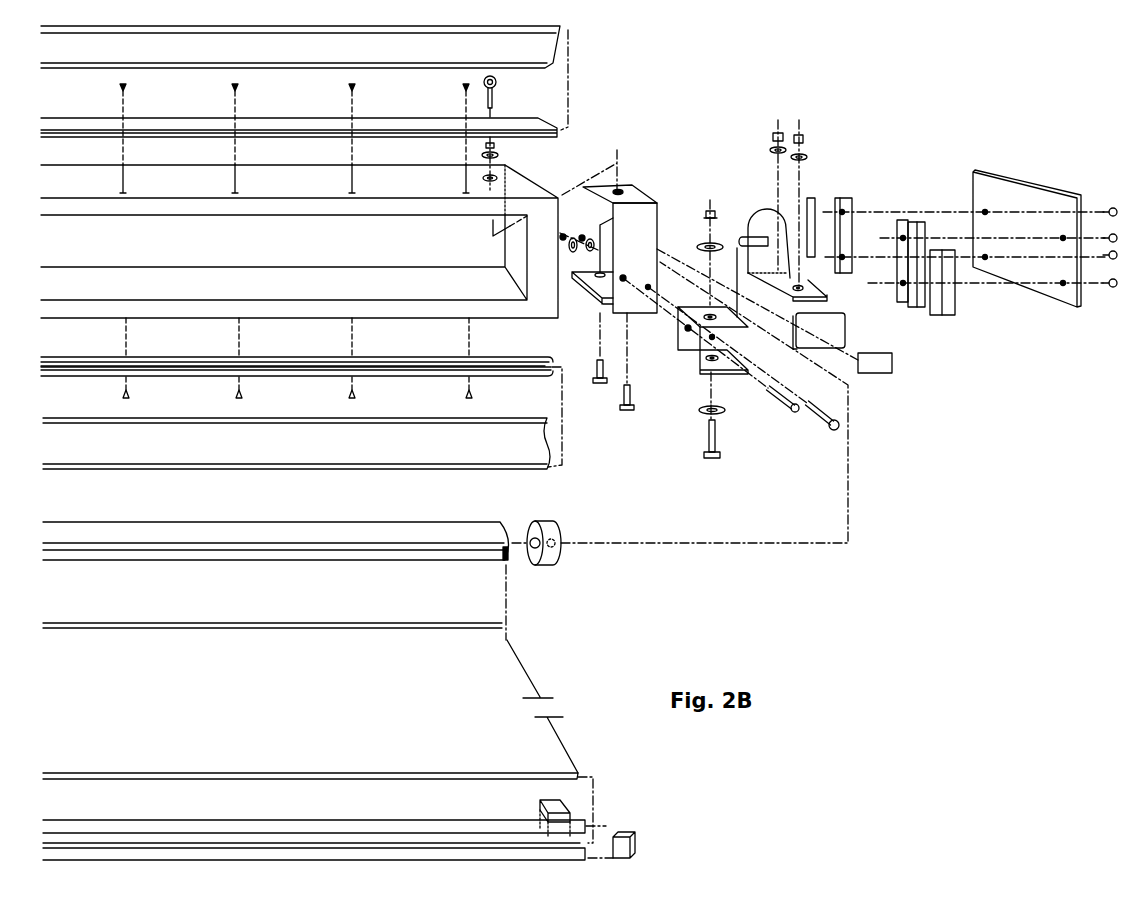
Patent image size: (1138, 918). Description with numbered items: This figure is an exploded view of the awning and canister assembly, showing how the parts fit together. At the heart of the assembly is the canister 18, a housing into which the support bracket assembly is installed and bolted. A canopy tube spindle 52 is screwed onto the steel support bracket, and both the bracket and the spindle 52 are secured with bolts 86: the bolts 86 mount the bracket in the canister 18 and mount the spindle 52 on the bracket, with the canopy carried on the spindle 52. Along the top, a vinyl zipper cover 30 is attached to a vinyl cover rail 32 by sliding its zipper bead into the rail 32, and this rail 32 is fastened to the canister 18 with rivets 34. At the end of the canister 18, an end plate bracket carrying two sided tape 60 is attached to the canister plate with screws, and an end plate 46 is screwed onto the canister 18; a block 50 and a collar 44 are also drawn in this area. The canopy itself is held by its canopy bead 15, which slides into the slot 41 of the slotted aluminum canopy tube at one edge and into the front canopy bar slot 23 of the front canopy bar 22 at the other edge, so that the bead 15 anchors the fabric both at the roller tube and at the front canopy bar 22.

The vinyl zipper cover 30 is at (560, 44).
The canister 18 is at (535, 185).
The rivets 34 is at (350, 397).
The vinyl cover rail 32 is at (497, 378).
The canopy tube spindle 52 is at (757, 213).
The end plate 46 is at (994, 172).
The block 50 is at (843, 328).
The two sided tape 60 is at (875, 373).
The bolts 86 is at (822, 422).
The collar 44 is at (563, 553).
The slot 41 is at (488, 550).
The canopy bead 15 is at (578, 773).
The front canopy bar 22 is at (254, 820).
The front canopy bar slot 23 is at (523, 845).